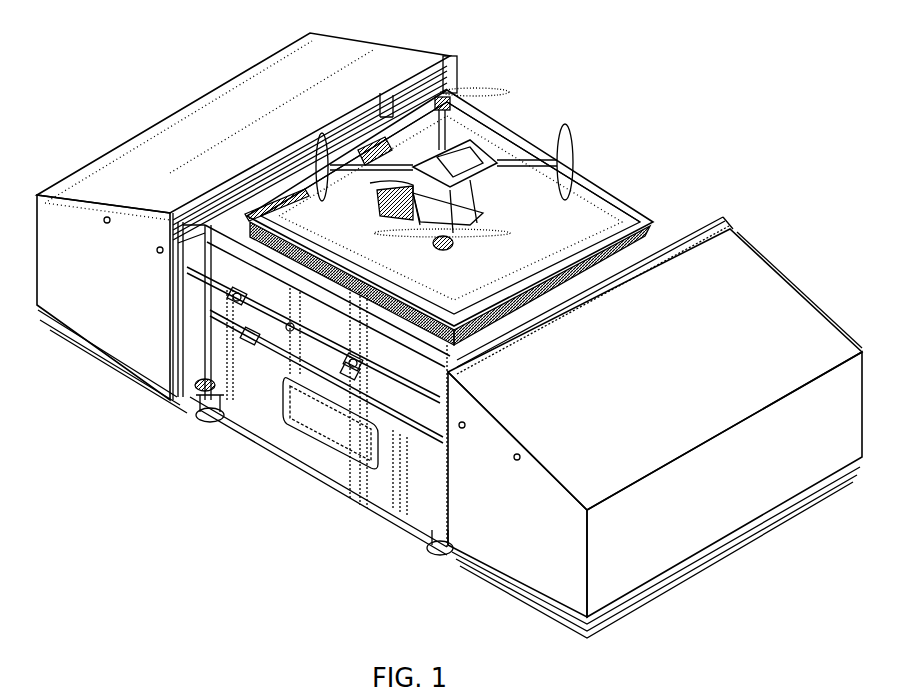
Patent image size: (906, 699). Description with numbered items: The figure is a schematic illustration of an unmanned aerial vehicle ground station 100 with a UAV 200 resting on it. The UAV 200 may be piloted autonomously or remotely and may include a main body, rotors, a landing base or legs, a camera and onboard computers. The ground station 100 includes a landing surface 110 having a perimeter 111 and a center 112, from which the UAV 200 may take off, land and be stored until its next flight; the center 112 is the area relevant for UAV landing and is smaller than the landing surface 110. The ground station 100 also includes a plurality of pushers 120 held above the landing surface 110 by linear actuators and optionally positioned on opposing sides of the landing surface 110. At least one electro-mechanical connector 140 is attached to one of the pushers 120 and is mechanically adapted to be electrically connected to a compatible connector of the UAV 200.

The ground station 100 is at (773, 187).
The landing surface 110 is at (487, 182).
The perimeter 111 is at (625, 193).
The center 112 is at (490, 207).
The pushers 120 is at (585, 200).
The electro-mechanical connector 140 is at (352, 153).
The UAV 200 is at (447, 172).